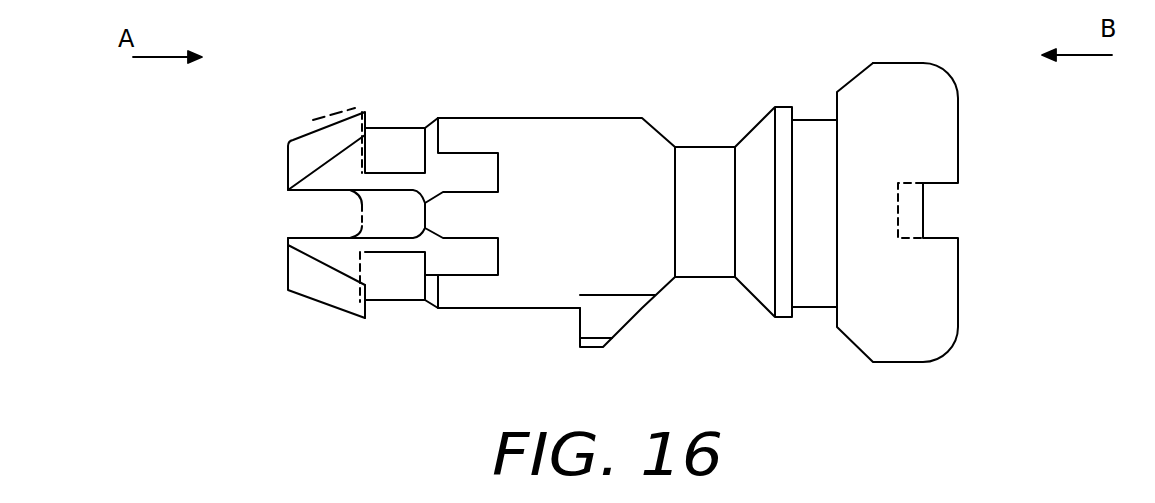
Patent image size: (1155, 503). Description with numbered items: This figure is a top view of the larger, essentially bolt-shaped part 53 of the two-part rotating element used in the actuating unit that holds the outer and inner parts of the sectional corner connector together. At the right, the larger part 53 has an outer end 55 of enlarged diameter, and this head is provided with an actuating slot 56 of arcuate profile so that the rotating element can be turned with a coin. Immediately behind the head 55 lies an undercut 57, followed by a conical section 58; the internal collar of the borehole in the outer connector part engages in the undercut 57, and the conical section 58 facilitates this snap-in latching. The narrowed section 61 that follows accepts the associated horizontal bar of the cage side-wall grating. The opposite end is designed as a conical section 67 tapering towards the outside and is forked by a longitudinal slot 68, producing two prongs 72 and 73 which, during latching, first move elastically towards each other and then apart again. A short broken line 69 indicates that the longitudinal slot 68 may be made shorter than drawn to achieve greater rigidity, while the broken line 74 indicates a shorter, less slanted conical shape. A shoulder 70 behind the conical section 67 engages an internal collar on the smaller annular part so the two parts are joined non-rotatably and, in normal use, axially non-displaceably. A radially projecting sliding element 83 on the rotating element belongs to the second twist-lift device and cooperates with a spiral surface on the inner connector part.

The larger bolt-shaped part 53 is at (966, 350).
The outer end 55 is at (920, 76).
The actuating slot 56 is at (931, 187).
The undercut 57 is at (813, 118).
The conical section 58 is at (762, 278).
The narrowed section 61 is at (695, 147).
The conical section 67 is at (327, 306).
The longitudinal slot 68 is at (408, 192).
The broken line 69 is at (352, 219).
The shoulder 70 is at (367, 310).
The prong 72 is at (343, 126).
The prong 73 is at (288, 292).
The broken line 74 is at (308, 130).
The sliding element 83 is at (593, 318).